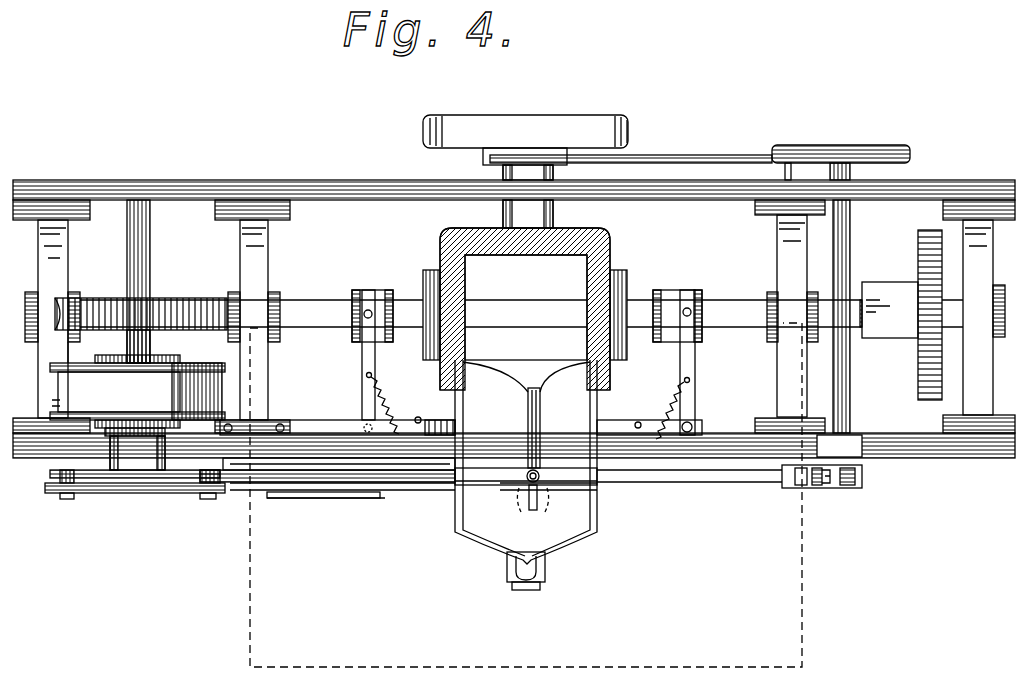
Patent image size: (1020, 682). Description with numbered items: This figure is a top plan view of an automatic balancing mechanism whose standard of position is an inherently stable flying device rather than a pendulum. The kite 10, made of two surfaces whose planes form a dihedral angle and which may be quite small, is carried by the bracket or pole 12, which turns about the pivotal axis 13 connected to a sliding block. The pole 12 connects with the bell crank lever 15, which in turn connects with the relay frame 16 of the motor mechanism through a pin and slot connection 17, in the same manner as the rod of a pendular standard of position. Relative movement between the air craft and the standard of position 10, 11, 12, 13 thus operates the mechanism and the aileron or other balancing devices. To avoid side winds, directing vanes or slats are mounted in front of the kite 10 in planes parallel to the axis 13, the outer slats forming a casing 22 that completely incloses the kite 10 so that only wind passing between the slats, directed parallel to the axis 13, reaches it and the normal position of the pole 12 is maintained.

The kite 10 is at (526, 462).
The standard of position component 11 is at (538, 472).
The bracket or pole 12 is at (545, 563).
The pivotal axis 13 is at (541, 587).
The bell crank lever 15 is at (416, 490).
The relay frame 16 is at (338, 468).
The pin and slot connection 17 is at (287, 498).
The casing 22 is at (396, 667).